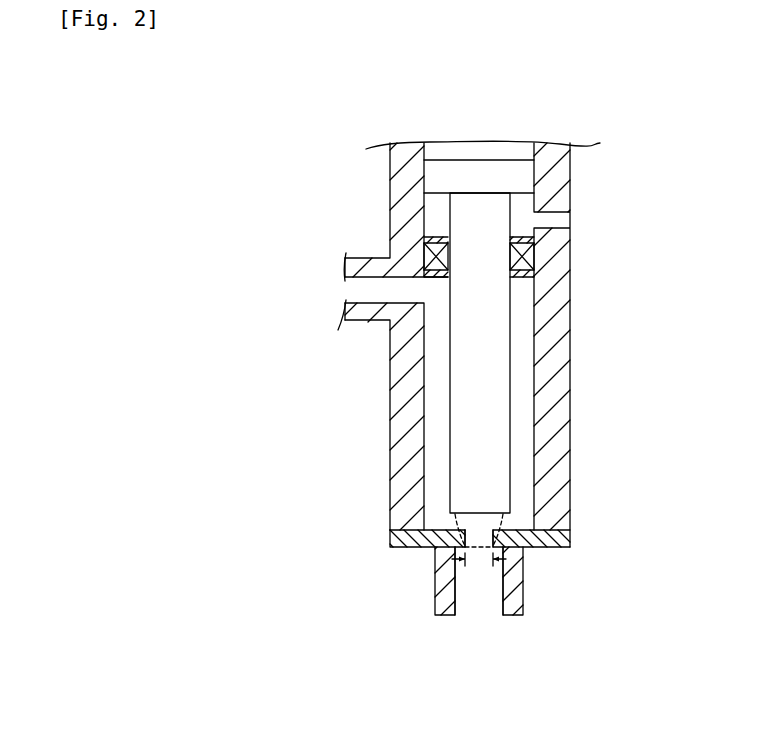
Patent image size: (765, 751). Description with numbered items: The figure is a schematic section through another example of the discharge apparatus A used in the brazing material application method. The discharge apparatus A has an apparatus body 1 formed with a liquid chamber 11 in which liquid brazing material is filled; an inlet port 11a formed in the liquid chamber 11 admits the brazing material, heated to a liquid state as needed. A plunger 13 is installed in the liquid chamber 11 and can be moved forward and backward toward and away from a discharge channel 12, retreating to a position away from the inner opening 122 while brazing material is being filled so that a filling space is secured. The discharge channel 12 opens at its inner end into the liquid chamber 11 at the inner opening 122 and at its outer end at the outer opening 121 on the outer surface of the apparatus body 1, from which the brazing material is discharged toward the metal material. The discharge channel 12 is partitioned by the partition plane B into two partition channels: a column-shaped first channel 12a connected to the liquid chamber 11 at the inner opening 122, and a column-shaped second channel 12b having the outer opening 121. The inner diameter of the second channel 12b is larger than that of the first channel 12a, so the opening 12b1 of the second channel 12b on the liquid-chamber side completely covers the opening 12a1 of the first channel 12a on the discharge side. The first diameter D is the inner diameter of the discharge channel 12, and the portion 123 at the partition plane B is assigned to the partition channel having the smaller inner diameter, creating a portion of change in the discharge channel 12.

The apparatus body 1 is at (485, 397).
The liquid chamber 11 is at (464, 345).
The inlet port 11a is at (355, 292).
The plunger 13 is at (482, 432).
The inner opening 122 is at (510, 507).
The discharge channel 12 is at (494, 587).
The first channel 12a is at (475, 546).
The opening of the first channel on a discharge side 12a1 is at (450, 526).
The portion of the discharge channel corresponding to a partition plane 123 is at (462, 544).
The second channel 12b is at (506, 603).
The opening of the second channel on the side of the liquid chamber 12b1 is at (457, 549).
The outer opening 121 is at (481, 606).
The discharge apparatus A is at (325, 169).
The partition plane B is at (467, 520).
The first diameter D is at (479, 559).